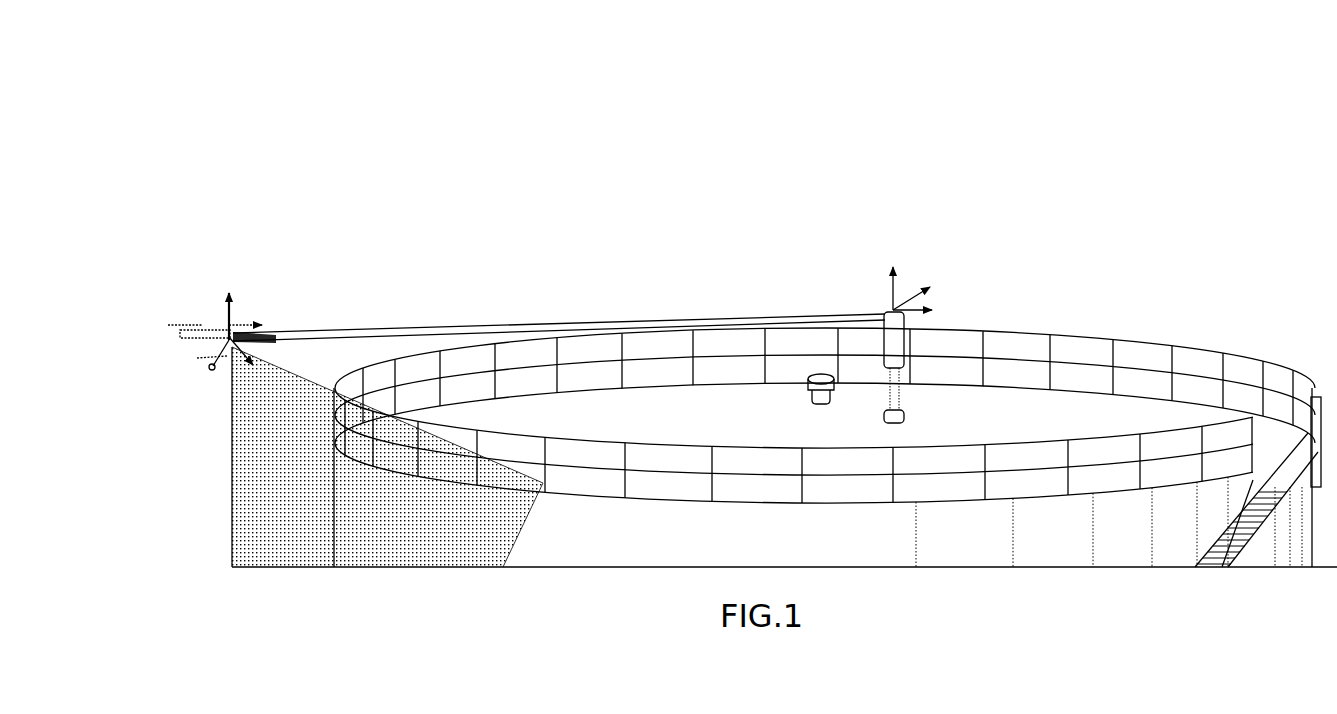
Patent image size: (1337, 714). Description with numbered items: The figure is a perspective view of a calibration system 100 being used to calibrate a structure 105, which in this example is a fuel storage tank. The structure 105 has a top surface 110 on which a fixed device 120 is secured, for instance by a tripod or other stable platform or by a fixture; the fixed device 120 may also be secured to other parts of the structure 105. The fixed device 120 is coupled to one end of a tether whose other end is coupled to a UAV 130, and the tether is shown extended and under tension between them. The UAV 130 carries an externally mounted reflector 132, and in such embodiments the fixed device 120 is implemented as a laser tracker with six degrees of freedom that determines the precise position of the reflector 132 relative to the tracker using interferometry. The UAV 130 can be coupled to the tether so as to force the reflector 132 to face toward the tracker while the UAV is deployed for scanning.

The calibration system 100 is at (470, 126).
The structure 105 is at (992, 543).
The top surface 110 is at (705, 397).
The fixed device 120 is at (915, 322).
The UAV 130 is at (232, 296).
The reflector 132 is at (255, 332).